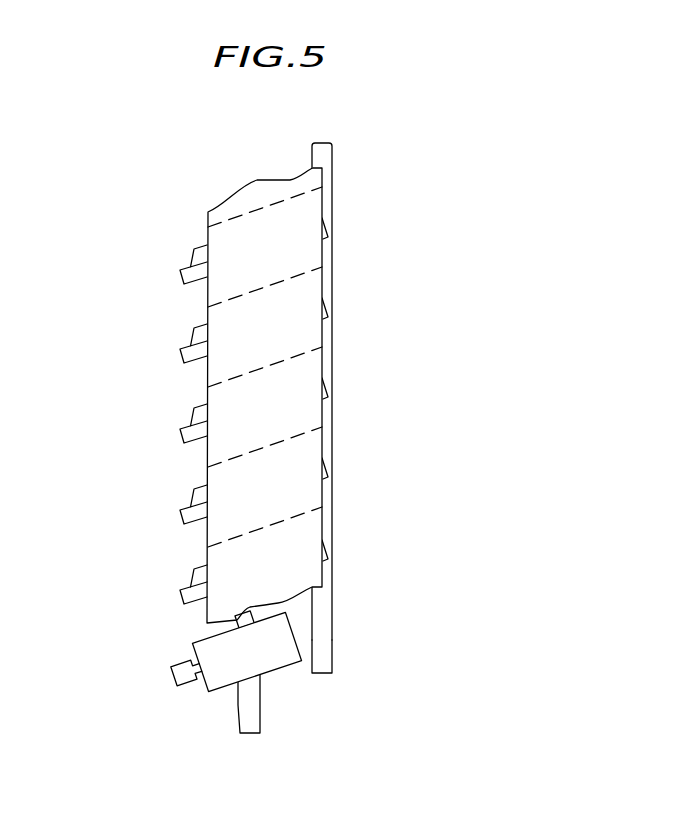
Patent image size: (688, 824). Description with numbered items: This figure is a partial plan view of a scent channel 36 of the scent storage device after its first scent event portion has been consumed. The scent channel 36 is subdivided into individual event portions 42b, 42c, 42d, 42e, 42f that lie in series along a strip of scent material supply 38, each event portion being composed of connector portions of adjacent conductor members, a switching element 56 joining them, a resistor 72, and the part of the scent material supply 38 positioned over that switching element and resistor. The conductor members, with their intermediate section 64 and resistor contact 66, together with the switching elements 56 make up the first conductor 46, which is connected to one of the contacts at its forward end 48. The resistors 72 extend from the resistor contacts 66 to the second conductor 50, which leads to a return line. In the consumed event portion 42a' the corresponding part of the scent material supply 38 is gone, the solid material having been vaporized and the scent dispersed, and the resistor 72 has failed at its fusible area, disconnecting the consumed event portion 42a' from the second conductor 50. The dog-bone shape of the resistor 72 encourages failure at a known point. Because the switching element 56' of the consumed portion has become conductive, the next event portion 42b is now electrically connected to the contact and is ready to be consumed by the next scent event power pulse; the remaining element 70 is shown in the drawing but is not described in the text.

The scent channel 36 is at (248, 183).
The scent material supply 38 is at (307, 377).
The event portion 42f is at (297, 260).
The event portion 42e is at (297, 340).
The event portion 42d is at (297, 420).
The event portion 42c is at (297, 499).
The event portion 42b is at (297, 580).
The consumed event portion 42a' is at (420, 654).
The first conductor 46 is at (241, 690).
The forward end 48 is at (258, 725).
The second conductor 50 is at (325, 572).
The switching element 56 is at (158, 552).
The switching element 56' is at (310, 664).
The intermediate section 64 is at (237, 622).
The resistor contact 66 is at (193, 698).
The notch 70 is at (303, 623).
The resistor 72 is at (181, 591).